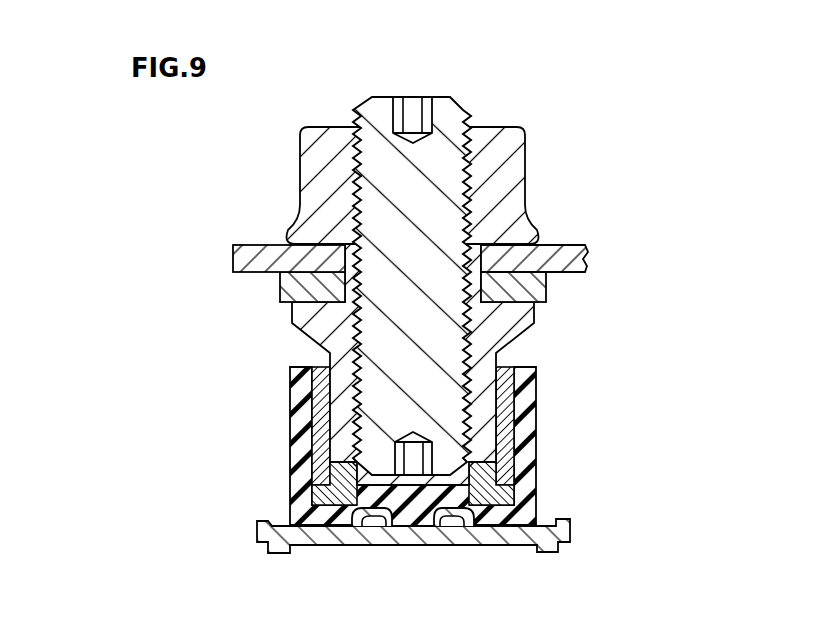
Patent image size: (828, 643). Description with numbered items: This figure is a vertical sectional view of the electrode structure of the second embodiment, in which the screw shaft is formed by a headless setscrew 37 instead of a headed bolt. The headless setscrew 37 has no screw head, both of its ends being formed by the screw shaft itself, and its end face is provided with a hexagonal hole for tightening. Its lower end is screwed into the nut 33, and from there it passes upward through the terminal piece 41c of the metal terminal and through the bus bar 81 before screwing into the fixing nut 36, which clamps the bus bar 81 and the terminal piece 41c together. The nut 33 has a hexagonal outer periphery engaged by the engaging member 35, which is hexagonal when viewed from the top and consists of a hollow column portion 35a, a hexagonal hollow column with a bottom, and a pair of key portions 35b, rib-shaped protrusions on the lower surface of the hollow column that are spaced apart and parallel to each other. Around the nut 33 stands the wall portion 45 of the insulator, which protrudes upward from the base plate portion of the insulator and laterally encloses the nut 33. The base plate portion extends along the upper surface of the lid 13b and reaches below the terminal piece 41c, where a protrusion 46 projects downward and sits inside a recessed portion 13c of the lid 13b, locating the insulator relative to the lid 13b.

The headless setscrew 37 is at (382, 120).
The fixing nut 36 is at (510, 152).
The bus bar 81 is at (565, 256).
The terminal piece 41c is at (290, 290).
The nut 33 is at (517, 316).
The wall portion 45 is at (298, 392).
The protrusion 46 is at (414, 530).
The engaging member 35 is at (474, 436).
The hollow column portion 35a is at (505, 423).
The key portion 35b is at (485, 497).
The lid 13b is at (499, 535).
The recessed portion 13c is at (384, 548).